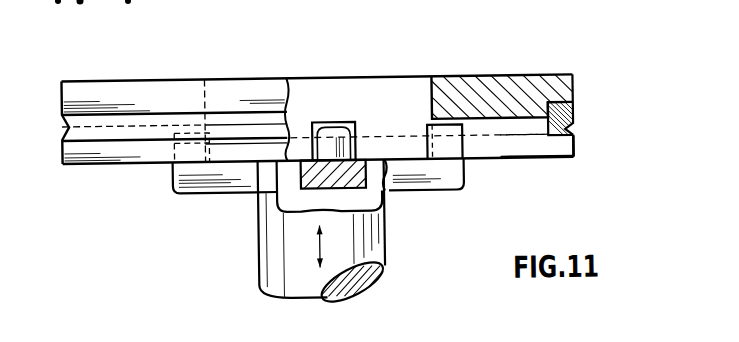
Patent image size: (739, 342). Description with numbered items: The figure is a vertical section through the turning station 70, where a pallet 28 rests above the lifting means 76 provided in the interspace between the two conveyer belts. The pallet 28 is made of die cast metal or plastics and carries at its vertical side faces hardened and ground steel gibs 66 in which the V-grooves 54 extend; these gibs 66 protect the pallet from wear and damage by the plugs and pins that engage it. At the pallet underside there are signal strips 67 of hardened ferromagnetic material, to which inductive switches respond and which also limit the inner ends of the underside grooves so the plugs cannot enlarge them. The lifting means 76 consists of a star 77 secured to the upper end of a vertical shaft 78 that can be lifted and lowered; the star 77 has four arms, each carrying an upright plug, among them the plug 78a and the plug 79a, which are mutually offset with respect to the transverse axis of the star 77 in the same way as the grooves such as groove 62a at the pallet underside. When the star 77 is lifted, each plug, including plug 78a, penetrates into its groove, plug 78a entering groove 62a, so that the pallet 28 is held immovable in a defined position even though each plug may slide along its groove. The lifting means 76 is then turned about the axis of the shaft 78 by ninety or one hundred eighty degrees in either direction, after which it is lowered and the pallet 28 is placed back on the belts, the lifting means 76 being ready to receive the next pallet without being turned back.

The turning station 70 is at (382, 64).
The pallet 28 is at (557, 73).
The V-groove 54 is at (574, 129).
The steel gib 66 is at (575, 150).
The groove 62a is at (523, 131).
The signal strip 67 is at (508, 149).
The star 77 is at (455, 177).
The lifting means 76 is at (403, 207).
The shaft 78 is at (370, 254).
The plug 78a is at (445, 143).
The plug 79a is at (183, 165).